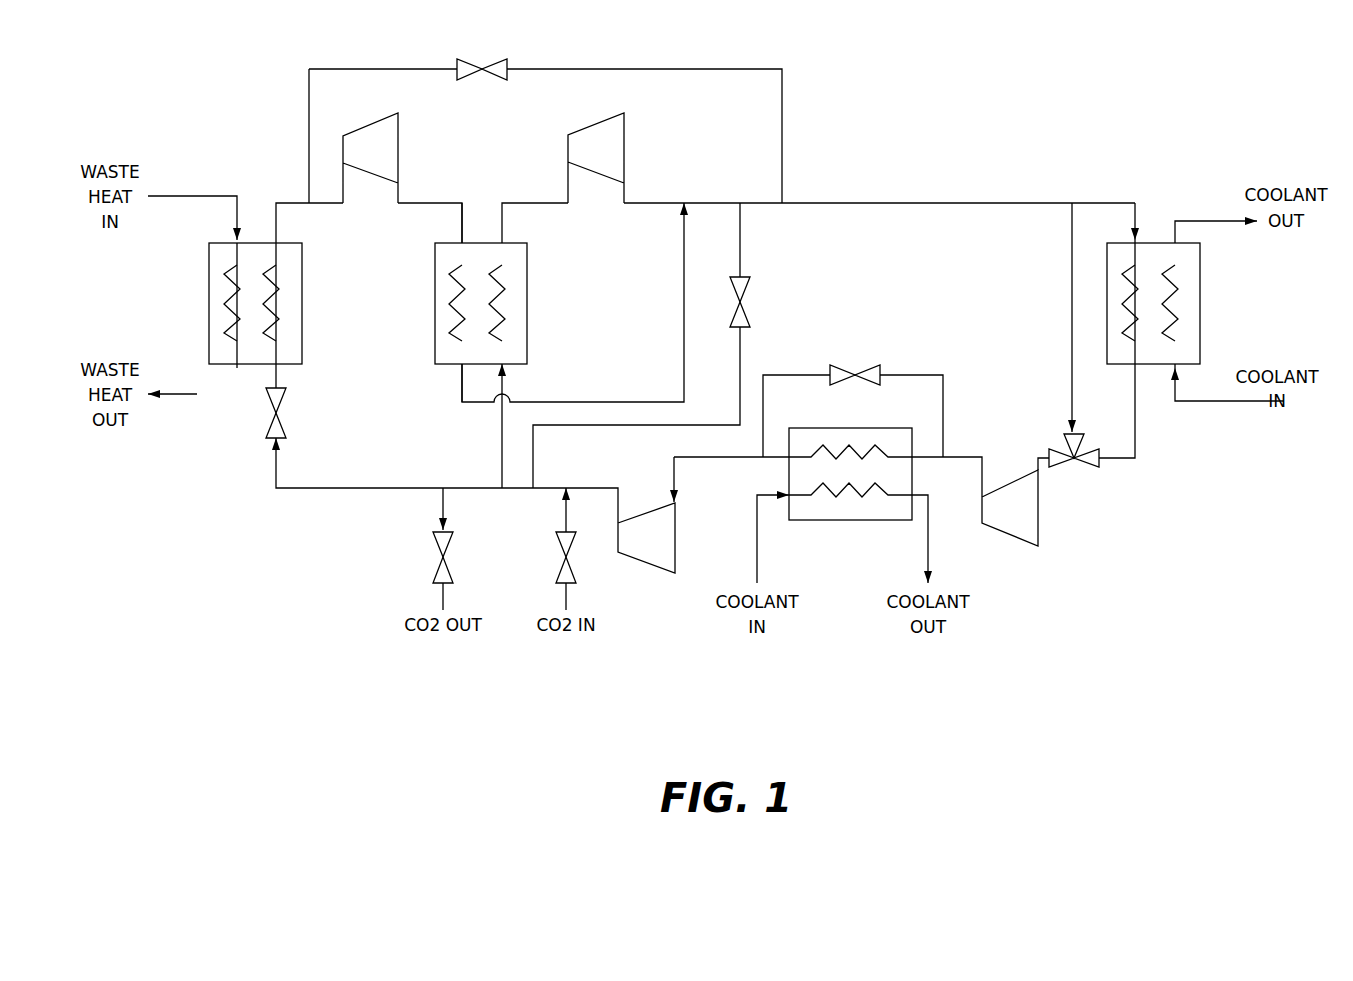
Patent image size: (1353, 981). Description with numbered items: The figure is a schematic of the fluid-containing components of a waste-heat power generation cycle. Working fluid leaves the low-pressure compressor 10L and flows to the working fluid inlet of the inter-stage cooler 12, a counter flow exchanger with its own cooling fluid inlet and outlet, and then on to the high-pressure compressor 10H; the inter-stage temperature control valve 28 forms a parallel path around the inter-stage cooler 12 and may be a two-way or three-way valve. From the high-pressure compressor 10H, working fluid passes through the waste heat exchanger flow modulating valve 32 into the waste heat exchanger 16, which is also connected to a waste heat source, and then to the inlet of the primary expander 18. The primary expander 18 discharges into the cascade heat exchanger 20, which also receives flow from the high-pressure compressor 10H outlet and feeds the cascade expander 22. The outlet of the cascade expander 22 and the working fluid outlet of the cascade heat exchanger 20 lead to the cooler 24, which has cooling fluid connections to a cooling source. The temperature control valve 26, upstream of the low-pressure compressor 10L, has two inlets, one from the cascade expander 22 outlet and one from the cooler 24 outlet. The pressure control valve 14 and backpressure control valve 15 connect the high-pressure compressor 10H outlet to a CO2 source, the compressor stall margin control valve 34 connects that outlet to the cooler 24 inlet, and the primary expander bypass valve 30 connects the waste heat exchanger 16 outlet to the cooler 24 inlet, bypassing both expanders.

The high-pressure compressor 10H is at (658, 560).
The low-pressure compressor 10L is at (1024, 529).
The inter-stage cooler 12 is at (865, 428).
The pressure control valve 14 is at (557, 545).
The backpressure control valve 15 is at (433, 545).
The waste heat exchanger 16 is at (302, 283).
The primary expander 18 is at (378, 121).
The cascade heat exchanger 20 is at (527, 283).
The cascade expander 22 is at (600, 122).
The cooler 24 is at (1201, 283).
The temperature control valve 26 is at (1058, 452).
The inter-stage temperature control valve 28 is at (843, 368).
The primary expander bypass valve 30 is at (472, 62).
The waste heat exchanger flow modulating valve 32 is at (287, 402).
The compressor stall margin control valve 34 is at (750, 292).